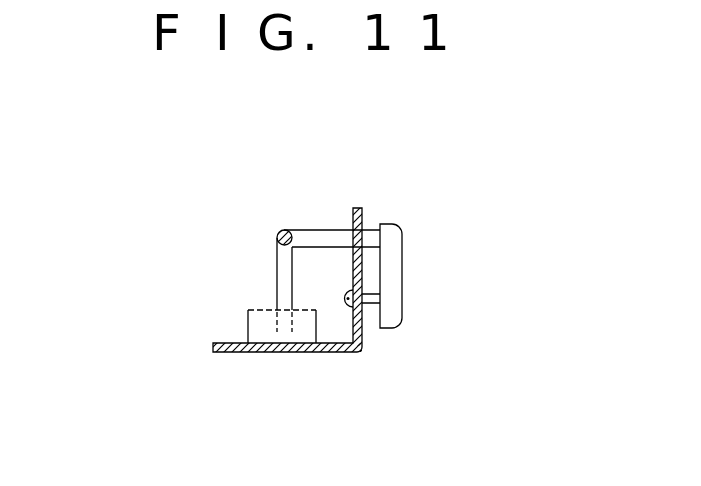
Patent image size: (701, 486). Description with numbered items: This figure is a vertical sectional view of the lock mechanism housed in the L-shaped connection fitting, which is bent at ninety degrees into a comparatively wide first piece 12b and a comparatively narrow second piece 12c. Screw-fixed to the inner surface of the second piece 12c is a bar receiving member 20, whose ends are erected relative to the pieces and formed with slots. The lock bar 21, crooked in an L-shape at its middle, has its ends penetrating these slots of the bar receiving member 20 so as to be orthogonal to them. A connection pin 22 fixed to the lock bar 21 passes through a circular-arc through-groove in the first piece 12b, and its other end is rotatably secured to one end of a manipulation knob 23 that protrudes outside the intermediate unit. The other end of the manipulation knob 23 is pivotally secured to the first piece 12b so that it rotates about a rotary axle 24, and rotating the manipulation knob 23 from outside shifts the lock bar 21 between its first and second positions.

The first piece 12b is at (364, 216).
The second piece 12c is at (227, 353).
The bar receiving member 20 is at (248, 330).
The lock bar 21 is at (277, 237).
The connection pin 22 is at (317, 230).
The manipulation knob 23 is at (396, 268).
The rotary axle 24 is at (373, 313).